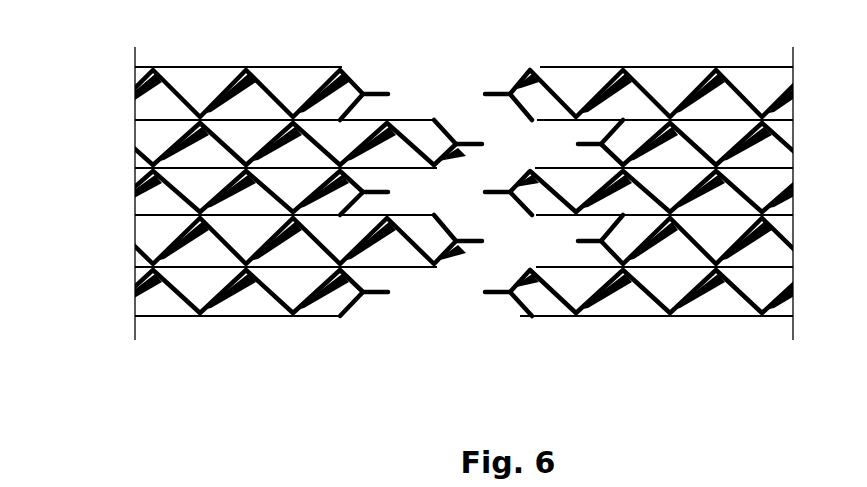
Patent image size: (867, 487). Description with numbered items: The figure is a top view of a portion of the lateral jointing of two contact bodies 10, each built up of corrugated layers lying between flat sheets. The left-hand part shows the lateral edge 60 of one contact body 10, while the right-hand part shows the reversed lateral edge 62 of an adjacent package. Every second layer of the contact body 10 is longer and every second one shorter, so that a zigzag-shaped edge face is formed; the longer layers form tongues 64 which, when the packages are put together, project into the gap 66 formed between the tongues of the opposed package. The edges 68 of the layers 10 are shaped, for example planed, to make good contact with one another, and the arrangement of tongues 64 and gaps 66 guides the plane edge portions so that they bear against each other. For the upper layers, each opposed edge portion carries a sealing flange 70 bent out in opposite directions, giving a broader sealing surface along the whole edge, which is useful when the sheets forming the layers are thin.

The contact body 10 is at (135, 229).
The lateral edge 60 is at (200, 67).
The reversed lateral edge 62 is at (660, 67).
The sealing flange 70 is at (487, 100).
The edges of the layers 68 is at (388, 295).
The tongue 64 is at (492, 293).
The gap 66 is at (553, 243).